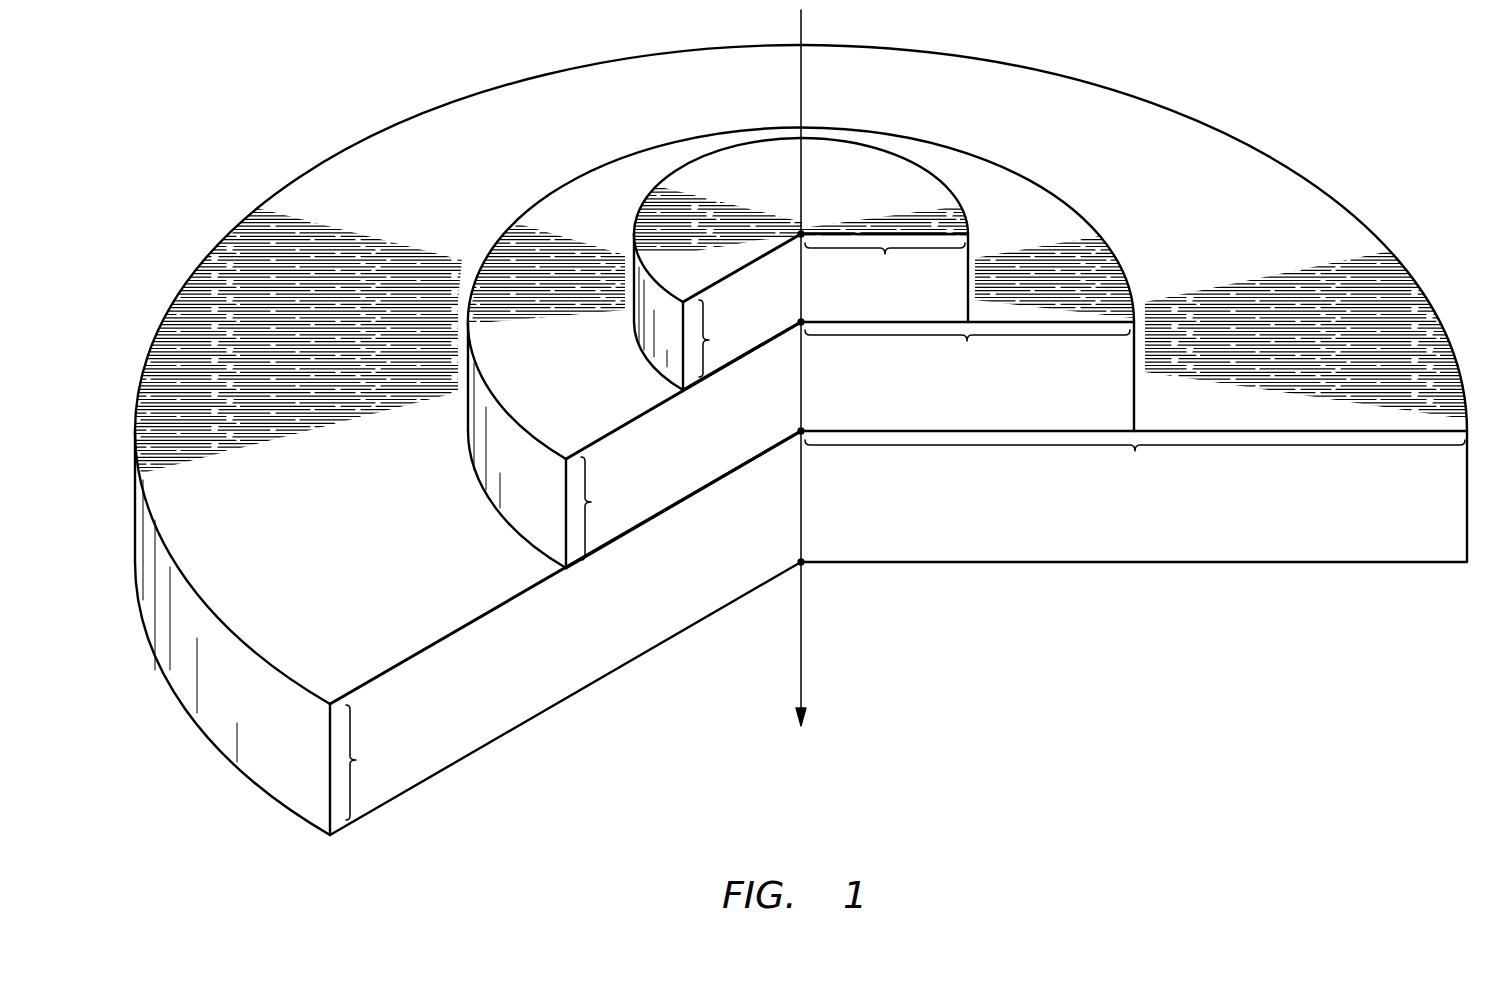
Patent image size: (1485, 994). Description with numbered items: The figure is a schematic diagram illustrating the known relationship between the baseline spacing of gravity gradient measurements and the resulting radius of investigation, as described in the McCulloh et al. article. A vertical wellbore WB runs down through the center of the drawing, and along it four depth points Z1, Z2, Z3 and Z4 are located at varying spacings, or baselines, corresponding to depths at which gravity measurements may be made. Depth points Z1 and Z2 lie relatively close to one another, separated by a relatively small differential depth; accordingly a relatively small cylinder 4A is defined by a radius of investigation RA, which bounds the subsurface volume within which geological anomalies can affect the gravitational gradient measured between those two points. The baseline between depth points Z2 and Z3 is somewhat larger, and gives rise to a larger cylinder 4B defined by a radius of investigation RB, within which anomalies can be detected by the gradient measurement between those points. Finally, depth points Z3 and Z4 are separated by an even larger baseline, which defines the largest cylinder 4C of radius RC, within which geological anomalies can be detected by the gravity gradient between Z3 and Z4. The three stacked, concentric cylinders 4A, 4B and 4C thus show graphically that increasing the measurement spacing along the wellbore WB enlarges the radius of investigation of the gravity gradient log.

The small cylinder 4A is at (763, 148).
The larger cylinder 4B is at (560, 197).
The largest cylinder 4C is at (355, 153).
The vertical wellbore WB is at (801, 663).
The depth point Z1 is at (801, 234).
The depth point Z2 is at (801, 322).
The depth point Z3 is at (801, 431).
The depth point Z4 is at (801, 562).
The radius of investigation RA is at (885, 268).
The radius of investigation RB is at (967, 355).
The radius of investigation RC is at (1135, 465).